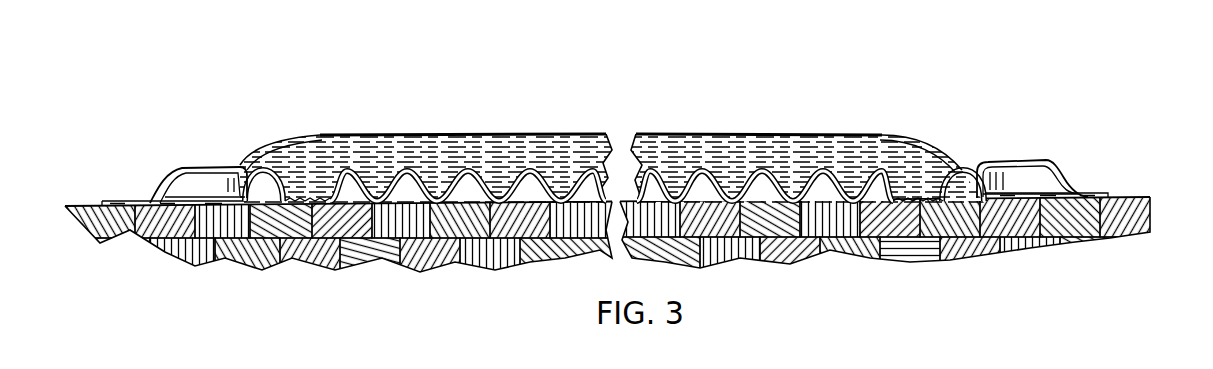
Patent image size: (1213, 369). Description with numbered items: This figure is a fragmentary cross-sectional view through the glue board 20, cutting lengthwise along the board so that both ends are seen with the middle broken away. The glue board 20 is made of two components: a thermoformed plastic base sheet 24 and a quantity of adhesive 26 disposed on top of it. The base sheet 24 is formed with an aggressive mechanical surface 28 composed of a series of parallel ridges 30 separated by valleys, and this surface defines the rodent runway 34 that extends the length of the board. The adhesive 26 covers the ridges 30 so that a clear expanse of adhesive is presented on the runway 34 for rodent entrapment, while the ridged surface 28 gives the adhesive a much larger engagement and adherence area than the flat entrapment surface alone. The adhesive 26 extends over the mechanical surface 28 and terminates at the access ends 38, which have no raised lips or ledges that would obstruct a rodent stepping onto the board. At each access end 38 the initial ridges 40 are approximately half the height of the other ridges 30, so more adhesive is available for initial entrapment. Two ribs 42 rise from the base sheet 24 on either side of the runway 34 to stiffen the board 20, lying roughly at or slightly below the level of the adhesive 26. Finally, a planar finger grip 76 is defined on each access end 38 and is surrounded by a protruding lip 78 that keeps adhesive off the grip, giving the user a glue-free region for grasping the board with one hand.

The glue board 20 is at (826, 94).
The plastic base sheet 24 is at (1093, 197).
The adhesive 26 is at (326, 160).
The aggressive mechanical surface 28 is at (848, 175).
The ridges 30 is at (765, 172).
The rodent runway 34 is at (425, 134).
The access ends 38 is at (120, 203).
The initial ridges 40 is at (350, 178).
The ribs 42 is at (277, 146).
The finger grip 76 is at (185, 196).
The lip 78 is at (215, 168).